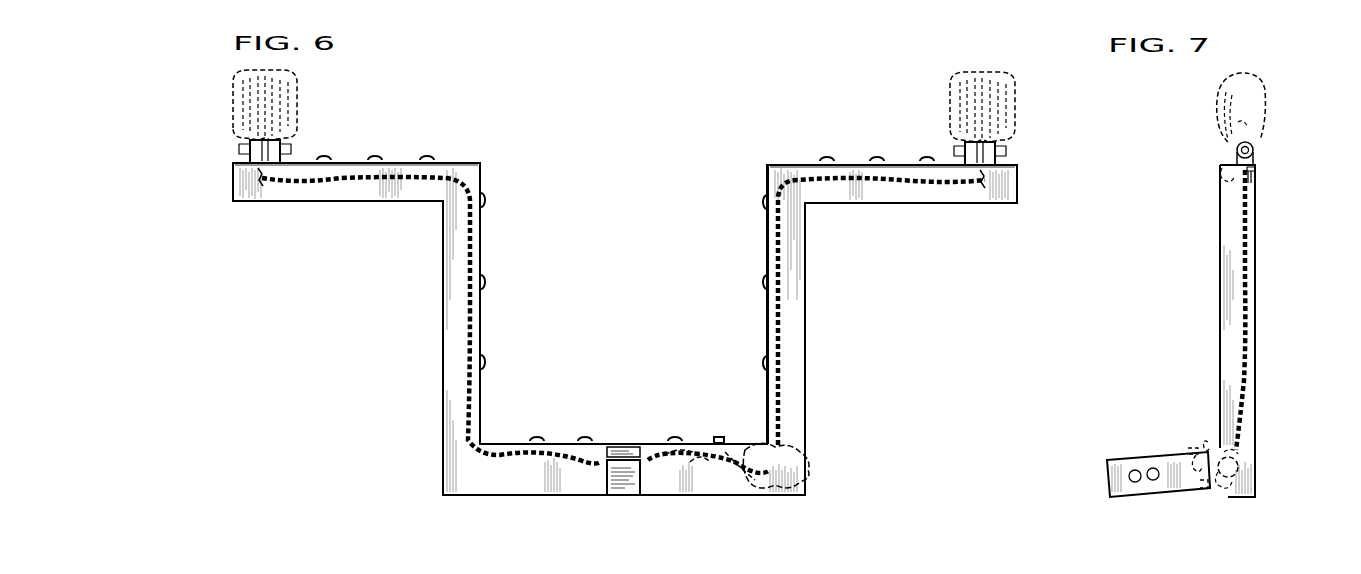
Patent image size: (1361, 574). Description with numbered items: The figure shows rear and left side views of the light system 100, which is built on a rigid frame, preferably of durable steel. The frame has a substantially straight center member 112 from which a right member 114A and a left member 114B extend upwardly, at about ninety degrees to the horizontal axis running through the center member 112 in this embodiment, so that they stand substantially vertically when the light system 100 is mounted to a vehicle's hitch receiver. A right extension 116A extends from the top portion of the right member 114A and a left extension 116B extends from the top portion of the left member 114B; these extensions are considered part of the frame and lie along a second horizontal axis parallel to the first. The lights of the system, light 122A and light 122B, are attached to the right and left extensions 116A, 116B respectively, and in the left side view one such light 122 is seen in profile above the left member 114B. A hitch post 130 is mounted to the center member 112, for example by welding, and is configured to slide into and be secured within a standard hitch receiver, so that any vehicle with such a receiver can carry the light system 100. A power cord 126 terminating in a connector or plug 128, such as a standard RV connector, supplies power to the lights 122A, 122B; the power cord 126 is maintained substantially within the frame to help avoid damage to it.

In FIG. 6, the light system 100 is at (288, 368).
In FIG. 6, the center member 112 is at (697, 493).
In FIG. 6, the right member 114A is at (450, 312).
In FIG. 6, the left member 114B is at (800, 338).
In FIG. 7, the left member 114B is at (1225, 308).
In FIG. 6, the right extension 116A is at (348, 190).
In FIG. 6, the left extension 116B is at (988, 198).
In FIG. 6, the light 122A is at (302, 110).
In FIG. 6, the light 122B is at (952, 113).
In FIG. 7, the hook attachment 122 is at (1248, 87).
In FIG. 6, the power cord 126 is at (475, 333).
In FIG. 7, the power cord 126 is at (1247, 365).
In FIG. 6, the plug 128 is at (800, 460).
In FIG. 7, the plug 128 is at (1233, 463).
In FIG. 6, the hitch post 130 is at (617, 497).
In FIG. 7, the hitch post 130 is at (1158, 457).